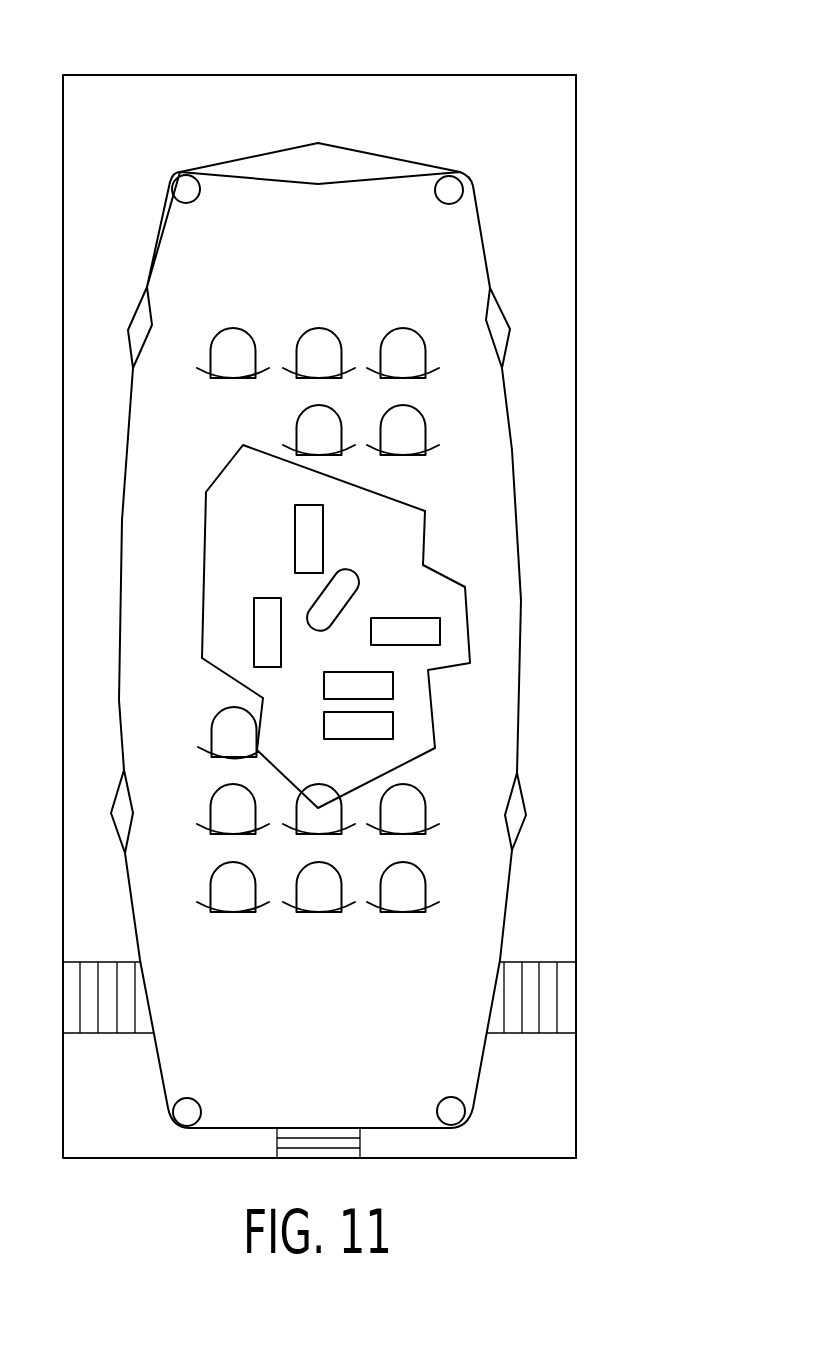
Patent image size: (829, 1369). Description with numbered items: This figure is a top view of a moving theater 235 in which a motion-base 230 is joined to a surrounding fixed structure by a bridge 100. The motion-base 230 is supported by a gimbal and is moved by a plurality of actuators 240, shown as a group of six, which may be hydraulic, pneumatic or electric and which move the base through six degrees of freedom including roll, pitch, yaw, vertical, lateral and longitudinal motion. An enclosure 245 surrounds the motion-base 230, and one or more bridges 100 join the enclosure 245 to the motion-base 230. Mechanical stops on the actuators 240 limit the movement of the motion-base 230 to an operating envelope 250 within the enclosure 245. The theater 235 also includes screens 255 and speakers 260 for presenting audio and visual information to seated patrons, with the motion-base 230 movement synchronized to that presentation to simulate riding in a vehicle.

The bridge 100 is at (529, 962).
The motion-base 230 is at (474, 162).
The theater 235 is at (629, 71).
The actuators 240 is at (350, 577).
The enclosure 245 is at (576, 386).
The operating envelope 250 is at (551, 249).
The screens 255 is at (318, 184).
The speakers 260 is at (200, 194).